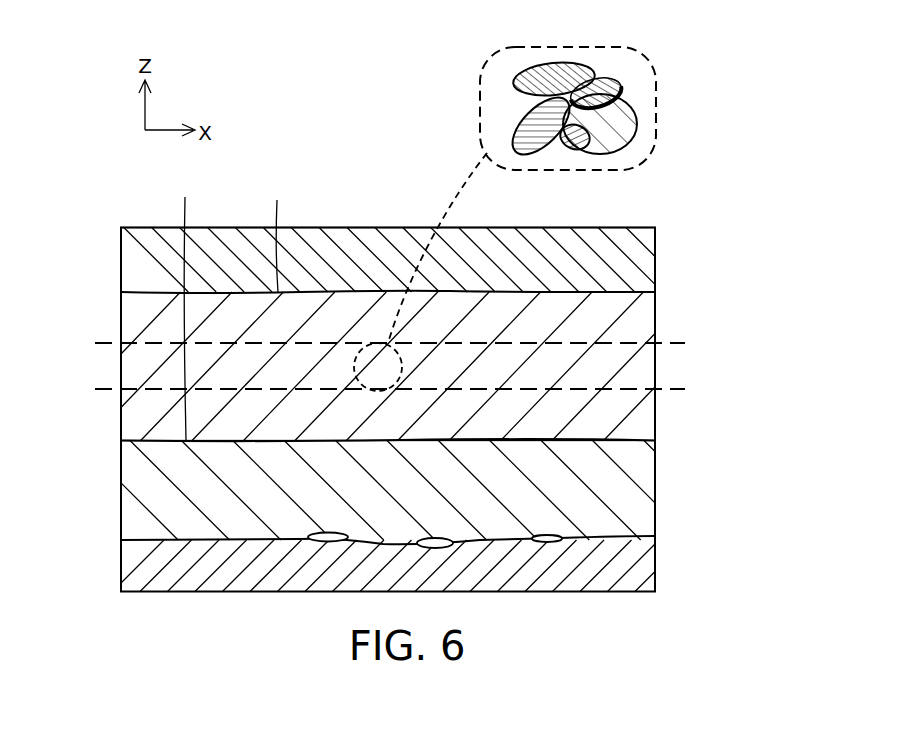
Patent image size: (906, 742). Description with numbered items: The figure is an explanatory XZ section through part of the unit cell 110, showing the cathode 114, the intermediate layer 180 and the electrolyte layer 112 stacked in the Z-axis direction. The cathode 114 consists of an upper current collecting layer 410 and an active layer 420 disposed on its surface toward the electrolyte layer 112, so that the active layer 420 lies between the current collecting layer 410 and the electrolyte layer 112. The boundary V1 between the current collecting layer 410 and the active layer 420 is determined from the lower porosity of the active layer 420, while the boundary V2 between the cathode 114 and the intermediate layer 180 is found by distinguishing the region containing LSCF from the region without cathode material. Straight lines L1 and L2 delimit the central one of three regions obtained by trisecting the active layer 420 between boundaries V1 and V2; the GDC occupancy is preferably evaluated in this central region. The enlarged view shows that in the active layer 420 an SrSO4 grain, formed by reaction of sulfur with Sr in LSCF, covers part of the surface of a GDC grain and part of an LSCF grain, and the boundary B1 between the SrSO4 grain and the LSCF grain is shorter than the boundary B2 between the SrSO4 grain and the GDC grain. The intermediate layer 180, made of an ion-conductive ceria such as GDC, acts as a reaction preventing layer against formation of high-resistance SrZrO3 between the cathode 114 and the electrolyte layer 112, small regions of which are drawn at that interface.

The unit cell 110 is at (346, 195).
The cathode 114 is at (737, 250).
The current collecting layer 410 is at (642, 263).
The active layer 420 is at (642, 312).
The intermediate layer 180 is at (647, 455).
The electrolyte layer 112 is at (647, 563).
The boundary between current collecting layer and active layer V1 is at (273, 231).
The boundary between cathode and intermediate layer V2 is at (188, 305).
The straight line L1 is at (97, 340).
The straight line L2 is at (97, 386).
The boundary between SrSO4 grain and LSCF grain B1 is at (574, 63).
The boundary between SrSO4 grain and GDC grain B2 is at (627, 98).
The LSCF grain LSCF is at (507, 130).
The GDC grain GDC is at (630, 124).
The SrSO4 grain SrSO4 is at (613, 133).
The SrZrO3 layer SrZrO3 is at (558, 538).